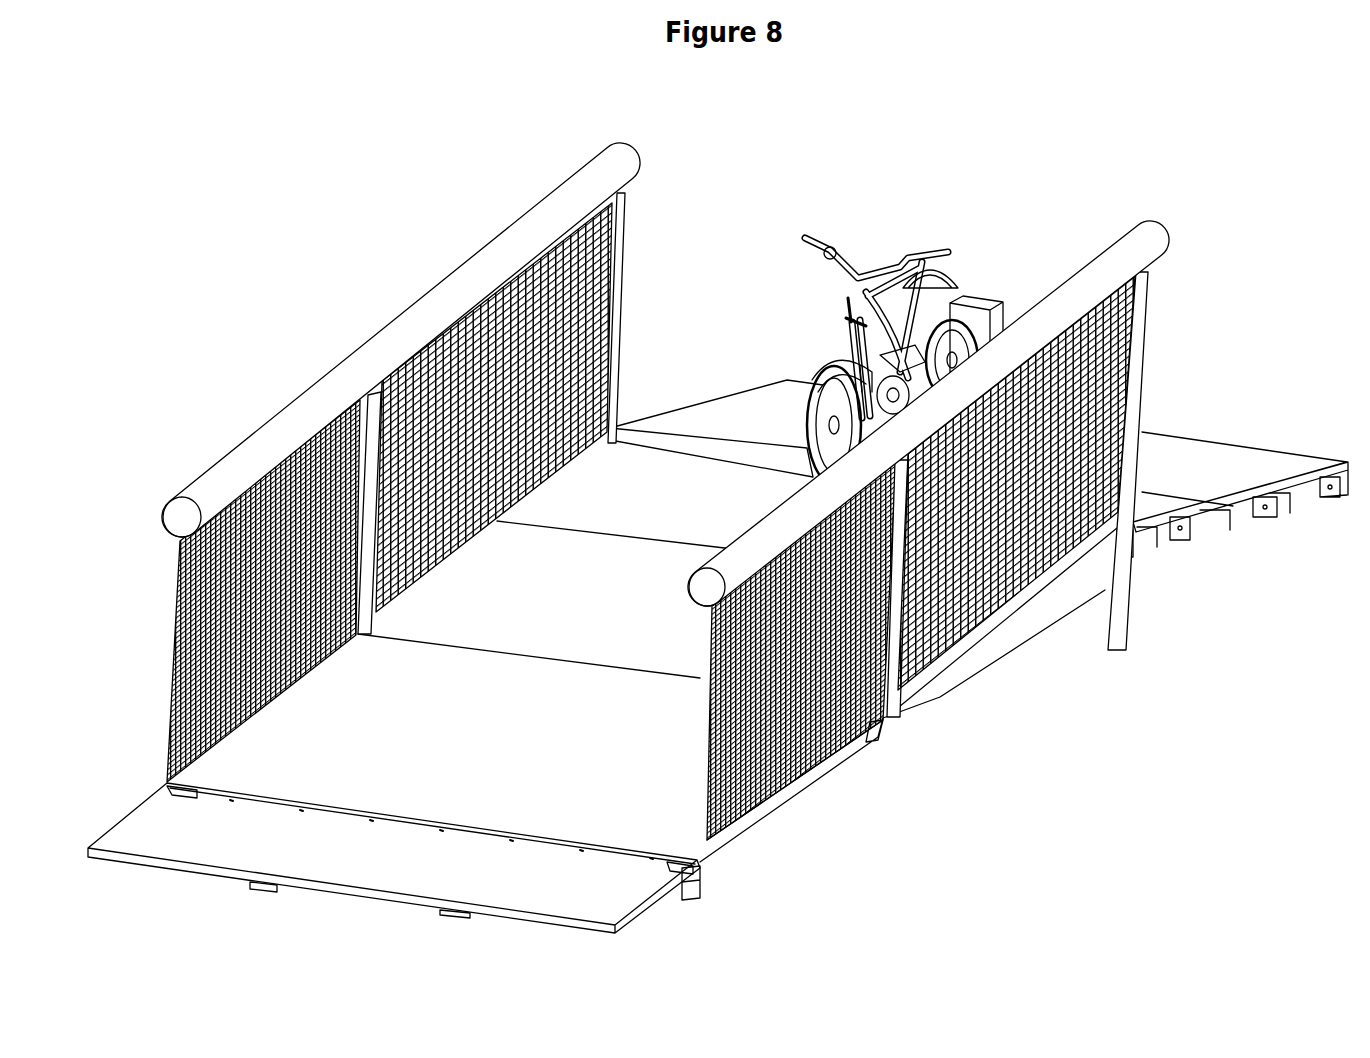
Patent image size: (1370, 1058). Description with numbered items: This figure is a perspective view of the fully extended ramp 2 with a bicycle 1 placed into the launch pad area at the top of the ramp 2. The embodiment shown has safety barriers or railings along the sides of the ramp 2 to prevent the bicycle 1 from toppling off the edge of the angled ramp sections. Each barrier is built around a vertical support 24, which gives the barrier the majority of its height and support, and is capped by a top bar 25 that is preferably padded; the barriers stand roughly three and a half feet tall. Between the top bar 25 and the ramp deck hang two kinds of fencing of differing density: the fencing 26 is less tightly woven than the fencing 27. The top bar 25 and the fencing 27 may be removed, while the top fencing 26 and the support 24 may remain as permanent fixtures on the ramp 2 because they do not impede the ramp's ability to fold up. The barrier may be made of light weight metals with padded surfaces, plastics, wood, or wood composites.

The bicycle 1 is at (889, 233).
The ramp 2 is at (1240, 418).
The vertical support 24 is at (618, 262).
The top bar 25 is at (552, 218).
The fencing 26 is at (425, 400).
The fencing 27 is at (243, 528).